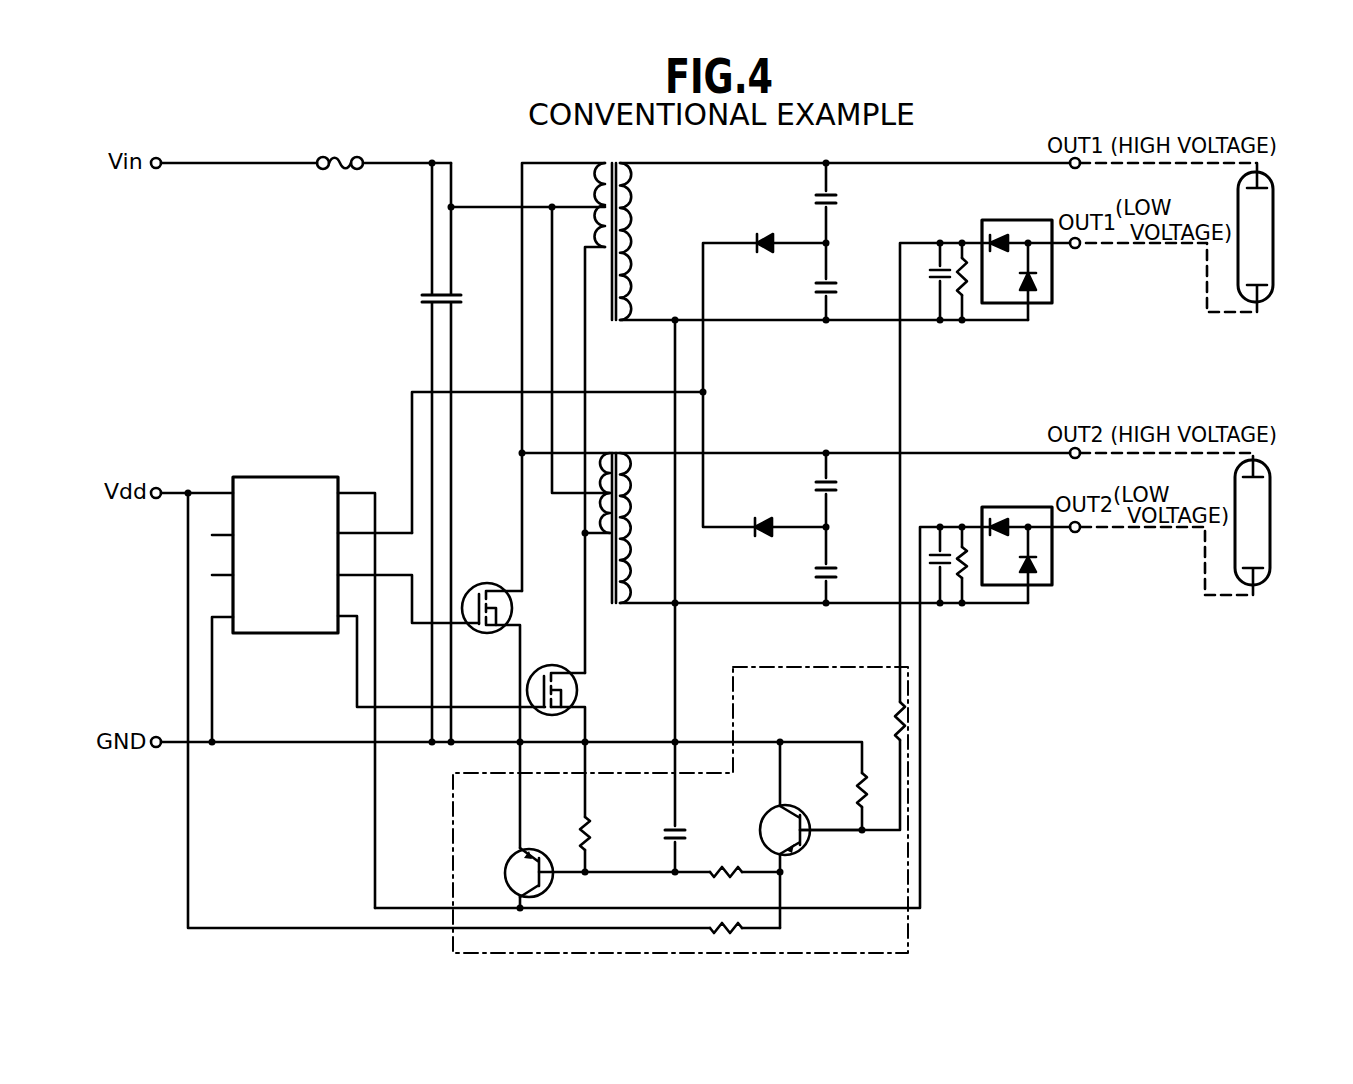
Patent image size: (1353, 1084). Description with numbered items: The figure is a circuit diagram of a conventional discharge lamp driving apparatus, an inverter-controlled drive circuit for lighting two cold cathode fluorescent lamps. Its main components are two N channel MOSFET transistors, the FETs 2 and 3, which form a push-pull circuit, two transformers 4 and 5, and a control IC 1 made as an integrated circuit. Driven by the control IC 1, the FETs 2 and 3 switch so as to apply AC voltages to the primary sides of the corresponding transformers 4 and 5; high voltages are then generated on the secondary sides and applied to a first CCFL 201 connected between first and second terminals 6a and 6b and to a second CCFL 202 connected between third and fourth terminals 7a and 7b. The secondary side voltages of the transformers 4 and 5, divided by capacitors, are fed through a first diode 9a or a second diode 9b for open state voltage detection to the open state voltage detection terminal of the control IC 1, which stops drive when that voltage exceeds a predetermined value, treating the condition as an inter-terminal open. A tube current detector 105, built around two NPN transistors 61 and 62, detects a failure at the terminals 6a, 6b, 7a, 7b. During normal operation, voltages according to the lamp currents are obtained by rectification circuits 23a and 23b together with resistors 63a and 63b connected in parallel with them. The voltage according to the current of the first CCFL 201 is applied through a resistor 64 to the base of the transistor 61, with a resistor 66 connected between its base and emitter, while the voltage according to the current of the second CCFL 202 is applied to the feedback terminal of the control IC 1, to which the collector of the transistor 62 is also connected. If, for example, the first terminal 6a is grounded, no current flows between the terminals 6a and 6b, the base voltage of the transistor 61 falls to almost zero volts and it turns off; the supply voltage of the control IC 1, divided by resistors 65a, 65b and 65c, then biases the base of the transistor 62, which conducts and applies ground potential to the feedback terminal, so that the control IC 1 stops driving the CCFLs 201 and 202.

The control IC 1 is at (262, 634).
The FET 2 is at (493, 584).
The FET 3 is at (557, 664).
The transformer 4 is at (624, 164).
The transformer 5 is at (619, 454).
The first terminal 6a is at (1078, 168).
The second terminal 6b is at (1078, 248).
The third terminal 7a is at (1078, 458).
The fourth terminal 7b is at (1078, 532).
The first diode for open state voltage detection 9a is at (764, 235).
The second diode for open state voltage detection 9b is at (765, 519).
The rectification circuit 23a is at (1050, 301).
The rectification circuit 23b is at (1052, 560).
The transistor 61 is at (805, 812).
The transistor 62 is at (504, 871).
The resistor 63a is at (965, 300).
The resistor 63b is at (965, 582).
The resistor 64 is at (899, 705).
The resistor 65a is at (727, 922).
The resistor 65b is at (741, 869).
The resistor 65c is at (590, 842).
The resistor 66 is at (863, 778).
The tube current detector 105 is at (797, 667).
The first CCFL 201 is at (1273, 234).
The second CCFL 202 is at (1270, 556).